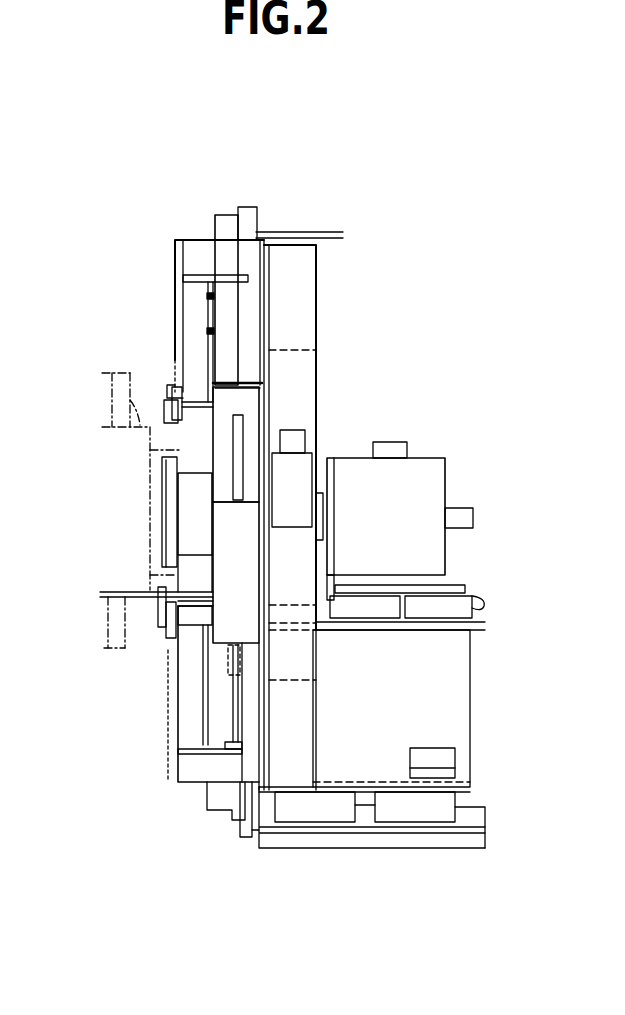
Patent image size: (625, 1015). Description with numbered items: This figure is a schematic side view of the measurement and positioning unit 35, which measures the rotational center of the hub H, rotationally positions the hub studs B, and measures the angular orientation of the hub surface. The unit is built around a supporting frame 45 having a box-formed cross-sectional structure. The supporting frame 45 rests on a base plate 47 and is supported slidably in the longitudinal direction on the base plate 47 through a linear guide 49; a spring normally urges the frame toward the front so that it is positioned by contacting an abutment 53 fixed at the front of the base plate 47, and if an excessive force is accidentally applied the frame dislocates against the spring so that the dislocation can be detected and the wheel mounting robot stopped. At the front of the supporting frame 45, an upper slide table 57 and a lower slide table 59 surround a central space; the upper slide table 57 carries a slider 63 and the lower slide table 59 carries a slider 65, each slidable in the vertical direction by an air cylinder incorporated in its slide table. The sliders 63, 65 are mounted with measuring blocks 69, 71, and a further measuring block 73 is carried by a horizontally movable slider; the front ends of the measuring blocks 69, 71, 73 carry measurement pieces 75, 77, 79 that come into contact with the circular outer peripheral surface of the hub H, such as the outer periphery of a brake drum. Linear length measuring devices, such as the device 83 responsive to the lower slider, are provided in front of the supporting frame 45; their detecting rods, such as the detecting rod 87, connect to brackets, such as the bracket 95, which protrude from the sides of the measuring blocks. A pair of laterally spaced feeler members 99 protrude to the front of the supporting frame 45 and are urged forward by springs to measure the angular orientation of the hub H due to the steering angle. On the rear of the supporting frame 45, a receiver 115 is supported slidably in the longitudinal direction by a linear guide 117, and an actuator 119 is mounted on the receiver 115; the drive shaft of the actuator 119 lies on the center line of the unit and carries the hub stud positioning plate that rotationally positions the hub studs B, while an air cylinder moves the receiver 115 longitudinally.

The measurement and positioning unit 35 is at (331, 214).
The supporting frame 45 is at (316, 270).
The base plate 47 is at (315, 842).
The linear guide 49 is at (368, 823).
The abutment 53 is at (243, 836).
The upper slide table 57 is at (257, 292).
The lower slide table 59 is at (252, 732).
The slider 63 is at (222, 252).
The slider 65 is at (215, 776).
The measuring block 69 is at (185, 300).
The measuring block 71 is at (188, 740).
The measuring block 73 is at (200, 480).
The measurement piece 75 is at (165, 405).
The measurement piece 77 is at (165, 636).
The measurement piece 79 is at (165, 497).
The linear length measuring device 83 is at (250, 581).
The detecting rod 87 is at (200, 276).
The bracket 95 is at (210, 760).
The feeler member 99 is at (150, 592).
The receiver 115 is at (440, 590).
The linear guide 117 is at (455, 610).
The actuator 119 is at (437, 482).
The hub H is at (120, 400).
The hub studs B is at (150, 450).